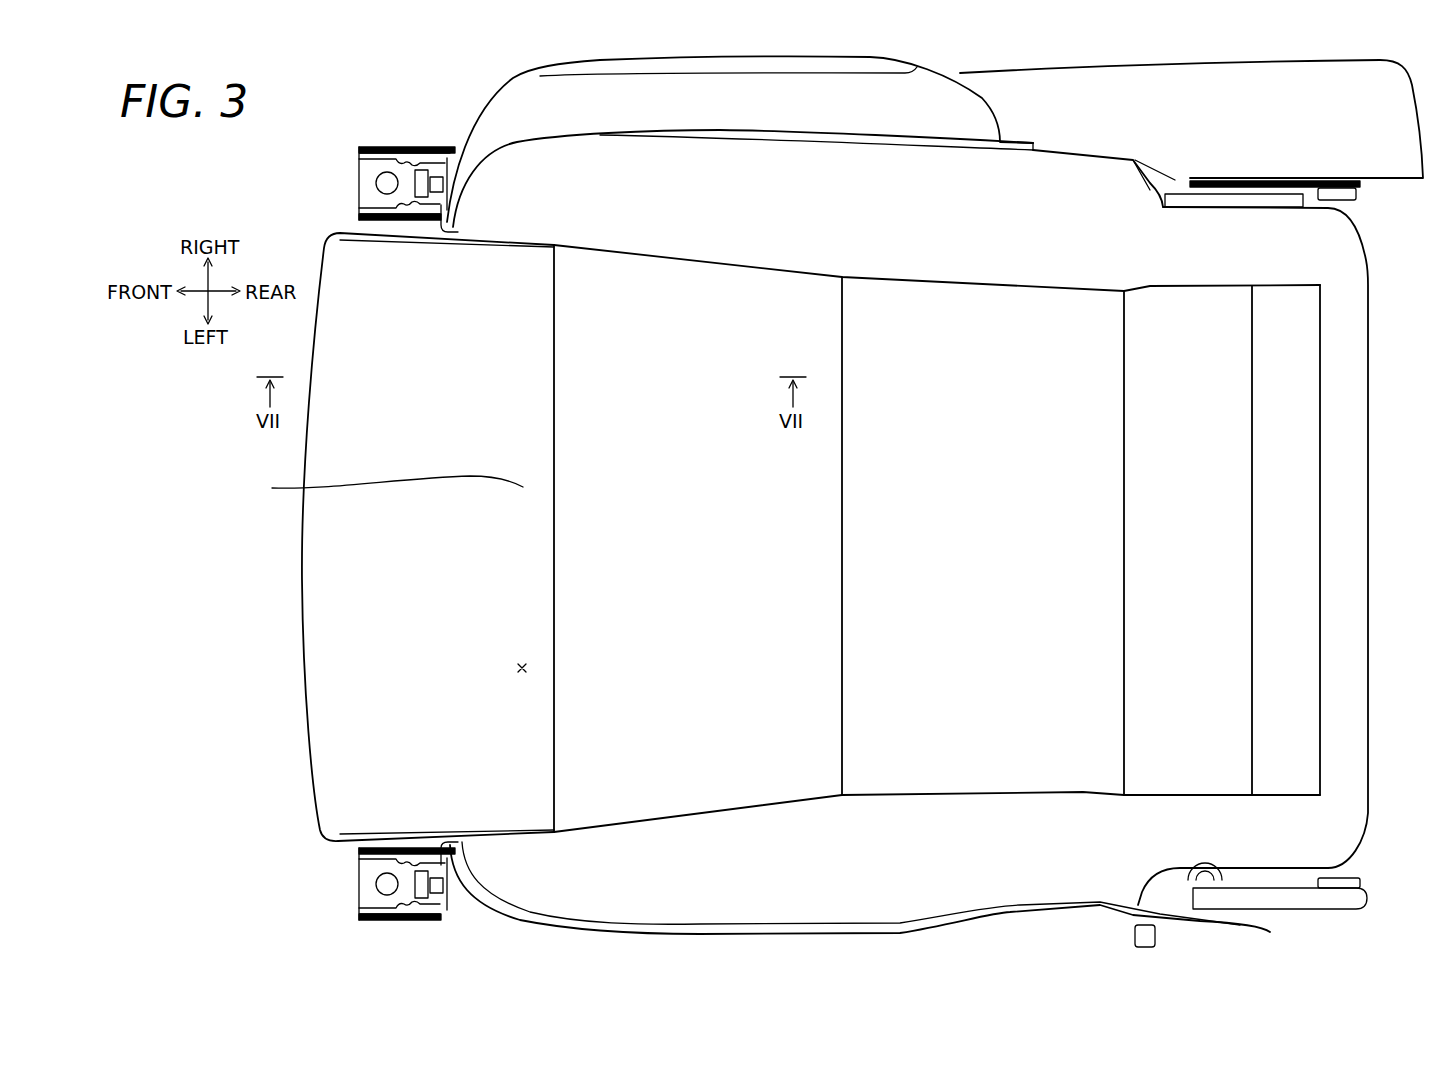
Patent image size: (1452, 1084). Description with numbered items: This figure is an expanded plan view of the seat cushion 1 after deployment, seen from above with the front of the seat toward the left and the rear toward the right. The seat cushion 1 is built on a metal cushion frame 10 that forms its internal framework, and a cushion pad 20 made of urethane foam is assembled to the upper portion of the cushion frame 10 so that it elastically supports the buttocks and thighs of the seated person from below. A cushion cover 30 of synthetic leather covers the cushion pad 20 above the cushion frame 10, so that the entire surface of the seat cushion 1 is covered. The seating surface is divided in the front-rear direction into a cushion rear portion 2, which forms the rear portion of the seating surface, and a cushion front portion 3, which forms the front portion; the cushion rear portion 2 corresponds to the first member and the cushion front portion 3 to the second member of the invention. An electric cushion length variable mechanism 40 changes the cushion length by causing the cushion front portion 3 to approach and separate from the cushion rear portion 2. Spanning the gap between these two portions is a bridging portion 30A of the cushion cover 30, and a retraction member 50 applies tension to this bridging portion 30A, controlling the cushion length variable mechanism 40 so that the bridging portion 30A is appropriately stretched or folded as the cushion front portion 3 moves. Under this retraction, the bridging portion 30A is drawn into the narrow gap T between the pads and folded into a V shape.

The seat cushion 1 is at (426, 84).
The cushion rear portion 2 is at (1019, 198).
The cushion front portion 3 is at (346, 541).
The cushion frame 10 is at (1200, 497).
The cushion pad 20 is at (1200, 433).
The cushion cover 30 is at (636, 937).
The bridging portion 30A is at (375, 488).
The cushion length variable mechanism 40 is at (296, 657).
The retraction member 50 is at (552, 598).
The gap T is at (513, 668).